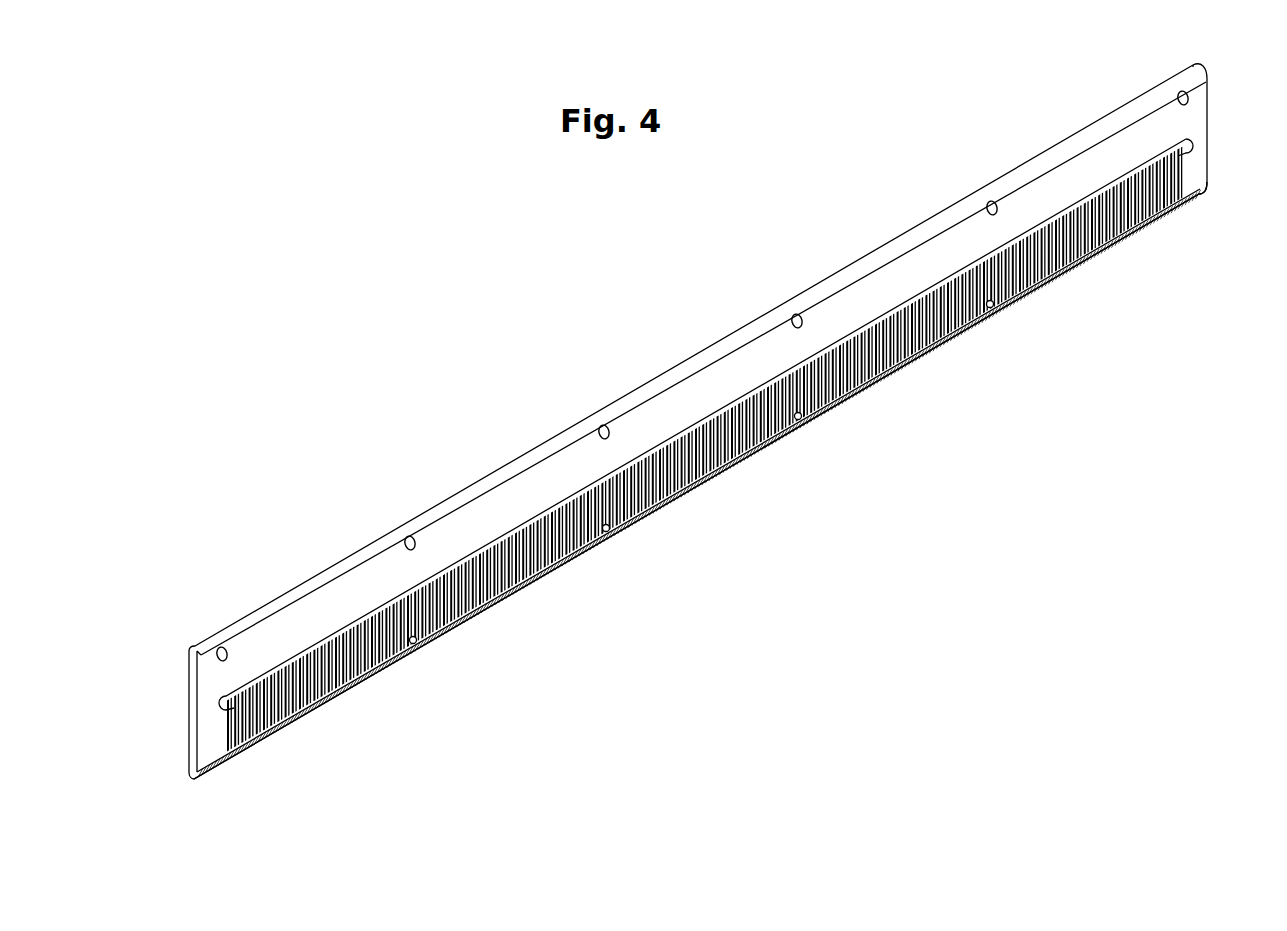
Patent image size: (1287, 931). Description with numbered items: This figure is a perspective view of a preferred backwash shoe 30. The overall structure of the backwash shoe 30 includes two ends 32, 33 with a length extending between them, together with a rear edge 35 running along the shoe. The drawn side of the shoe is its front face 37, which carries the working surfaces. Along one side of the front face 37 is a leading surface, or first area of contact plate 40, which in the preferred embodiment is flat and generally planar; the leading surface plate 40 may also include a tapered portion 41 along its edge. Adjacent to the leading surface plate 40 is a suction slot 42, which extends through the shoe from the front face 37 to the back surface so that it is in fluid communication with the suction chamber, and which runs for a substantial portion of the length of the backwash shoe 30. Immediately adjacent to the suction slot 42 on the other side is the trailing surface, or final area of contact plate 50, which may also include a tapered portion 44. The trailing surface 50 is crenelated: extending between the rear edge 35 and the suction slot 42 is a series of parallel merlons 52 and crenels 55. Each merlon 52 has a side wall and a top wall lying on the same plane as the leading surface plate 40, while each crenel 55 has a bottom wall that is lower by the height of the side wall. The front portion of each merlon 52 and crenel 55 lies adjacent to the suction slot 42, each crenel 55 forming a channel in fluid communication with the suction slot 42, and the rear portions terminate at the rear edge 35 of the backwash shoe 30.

The backwash shoe 30 is at (573, 406).
The end 32 is at (190, 744).
The end 33 is at (1210, 113).
The rear edge 35 is at (192, 779).
The front face 37 is at (247, 669).
The leading surface plate 40 is at (1010, 210).
The tapered portion 41 is at (1107, 140).
The suction slot 42 is at (1194, 143).
The tapered portion 44 is at (1194, 197).
The trailing surface plate 50 is at (705, 461).
The merlon 52 is at (467, 560).
The crenel 55 is at (483, 612).